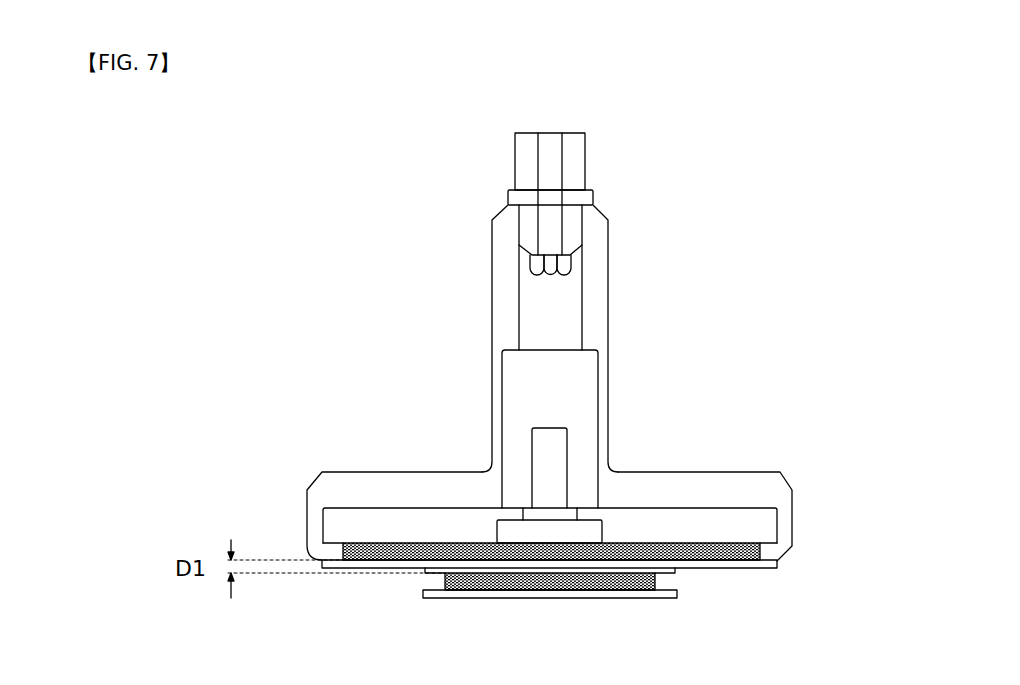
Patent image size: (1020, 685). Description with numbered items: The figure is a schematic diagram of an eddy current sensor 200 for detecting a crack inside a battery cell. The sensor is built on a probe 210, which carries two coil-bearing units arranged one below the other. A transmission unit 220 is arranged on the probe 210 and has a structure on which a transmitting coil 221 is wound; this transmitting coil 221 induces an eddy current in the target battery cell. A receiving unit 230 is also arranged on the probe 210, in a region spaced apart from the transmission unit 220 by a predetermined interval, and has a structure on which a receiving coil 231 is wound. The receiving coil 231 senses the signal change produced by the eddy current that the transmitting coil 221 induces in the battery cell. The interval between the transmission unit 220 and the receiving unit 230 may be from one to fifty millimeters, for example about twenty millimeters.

The eddy current sensor 200 is at (262, 186).
The probe 210 is at (335, 525).
The transmission unit 220 is at (783, 547).
The transmitting coil 221 is at (337, 553).
The receiving unit 230 is at (707, 584).
The receiving coil 231 is at (468, 592).